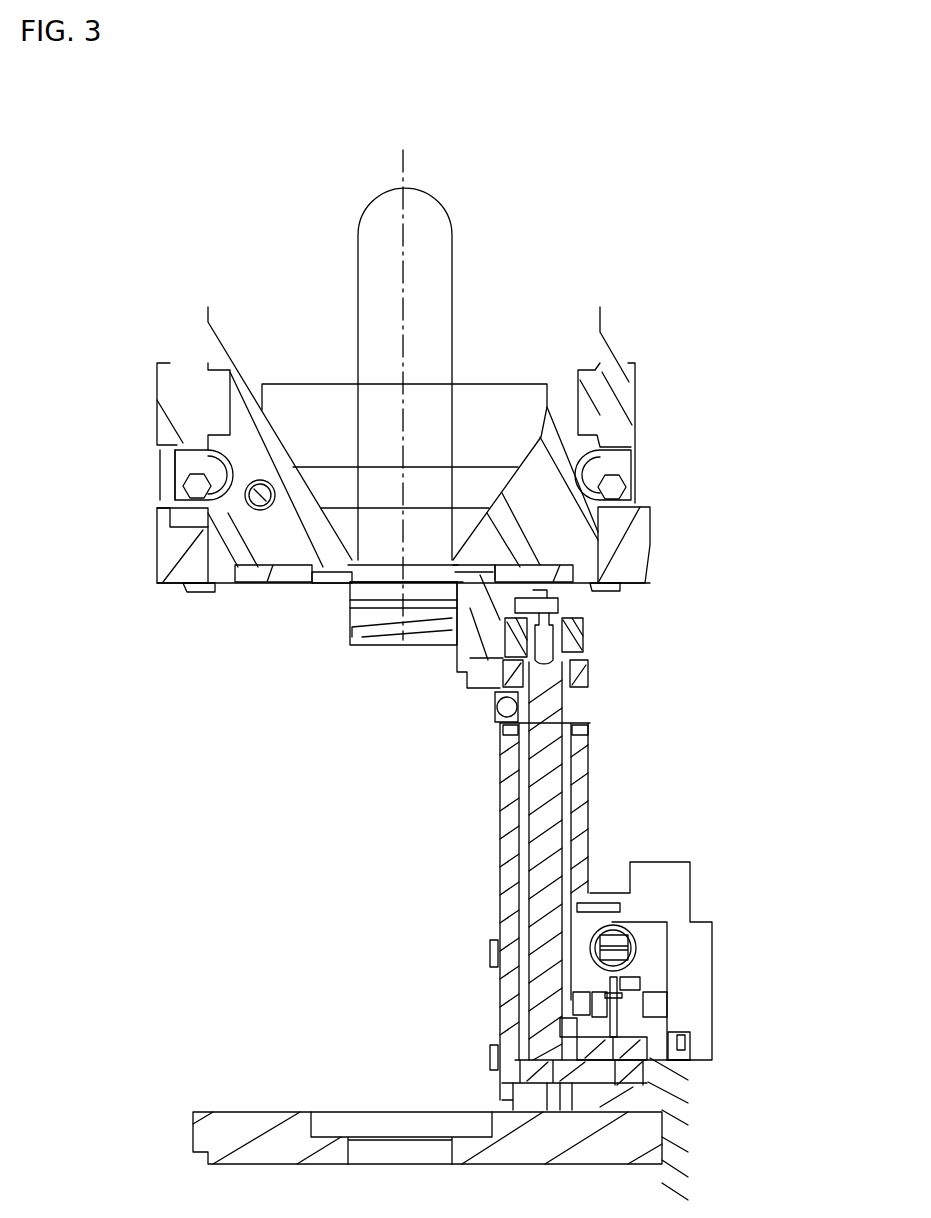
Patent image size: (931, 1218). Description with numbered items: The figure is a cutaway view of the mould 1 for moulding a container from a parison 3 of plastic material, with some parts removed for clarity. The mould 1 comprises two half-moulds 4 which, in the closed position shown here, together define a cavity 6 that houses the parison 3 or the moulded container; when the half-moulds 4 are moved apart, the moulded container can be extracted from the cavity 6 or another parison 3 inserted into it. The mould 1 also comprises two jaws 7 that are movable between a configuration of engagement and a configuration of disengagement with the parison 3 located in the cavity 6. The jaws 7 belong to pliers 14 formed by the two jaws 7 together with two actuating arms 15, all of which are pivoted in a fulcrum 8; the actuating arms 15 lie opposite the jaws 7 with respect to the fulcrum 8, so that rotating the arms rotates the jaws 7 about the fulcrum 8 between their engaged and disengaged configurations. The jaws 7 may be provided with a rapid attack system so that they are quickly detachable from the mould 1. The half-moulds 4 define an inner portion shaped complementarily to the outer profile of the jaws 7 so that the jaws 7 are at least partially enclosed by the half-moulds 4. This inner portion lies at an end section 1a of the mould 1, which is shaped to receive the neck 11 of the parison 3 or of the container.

The mould 1 is at (709, 245).
The end section 1a is at (145, 590).
The parison 3 is at (425, 228).
The half-moulds 4 is at (128, 409).
The cavity 6 is at (312, 410).
The jaws 7 is at (462, 643).
The fulcrum 8 is at (547, 615).
The neck 11 is at (327, 575).
The pliers 14 is at (610, 752).
The actuating arms 15 is at (547, 812).